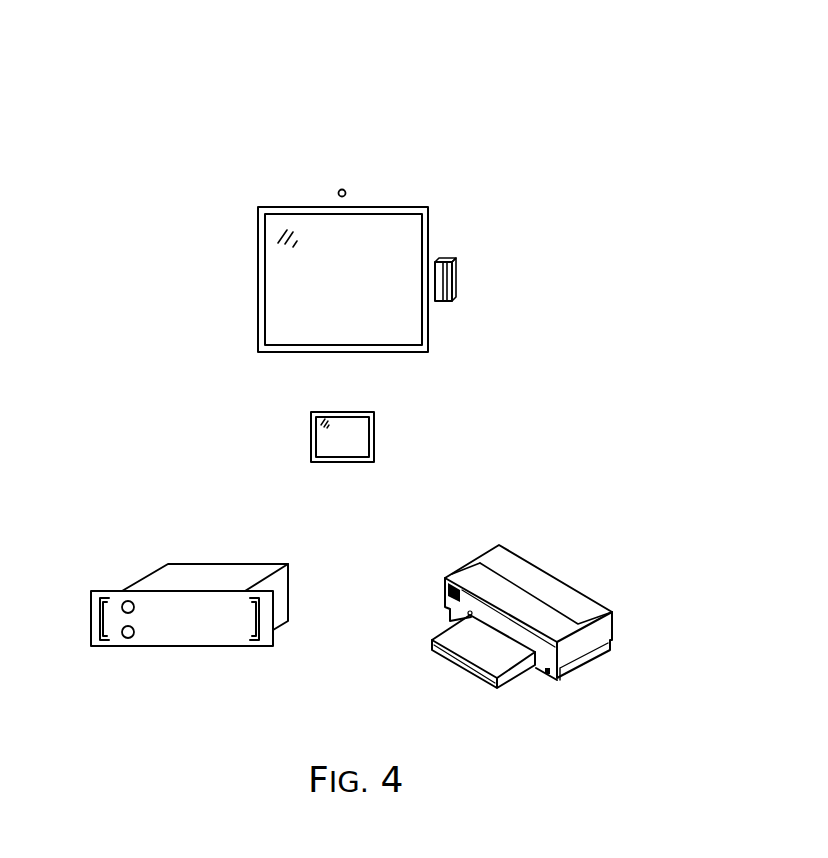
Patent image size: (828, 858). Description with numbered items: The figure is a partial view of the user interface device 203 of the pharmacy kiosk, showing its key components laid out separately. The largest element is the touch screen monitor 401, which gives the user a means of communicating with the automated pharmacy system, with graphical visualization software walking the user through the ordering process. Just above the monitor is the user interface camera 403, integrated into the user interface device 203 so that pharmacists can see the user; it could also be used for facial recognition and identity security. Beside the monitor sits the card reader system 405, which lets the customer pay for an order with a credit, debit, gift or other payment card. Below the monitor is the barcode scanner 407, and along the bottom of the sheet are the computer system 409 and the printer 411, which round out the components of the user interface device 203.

The user interface device 203 is at (568, 111).
The touch screen monitor 401 is at (258, 282).
The user interface camera 403 is at (338, 191).
The card reader system 405 is at (458, 280).
The barcode scanner 407 is at (311, 434).
The computer system 409 is at (148, 578).
The printer 411 is at (542, 568).